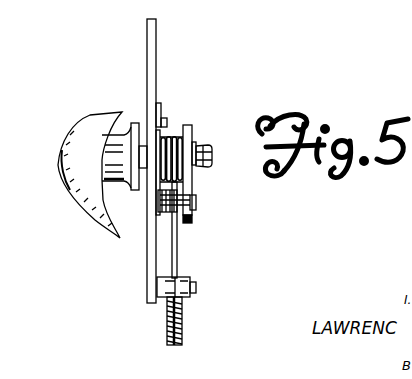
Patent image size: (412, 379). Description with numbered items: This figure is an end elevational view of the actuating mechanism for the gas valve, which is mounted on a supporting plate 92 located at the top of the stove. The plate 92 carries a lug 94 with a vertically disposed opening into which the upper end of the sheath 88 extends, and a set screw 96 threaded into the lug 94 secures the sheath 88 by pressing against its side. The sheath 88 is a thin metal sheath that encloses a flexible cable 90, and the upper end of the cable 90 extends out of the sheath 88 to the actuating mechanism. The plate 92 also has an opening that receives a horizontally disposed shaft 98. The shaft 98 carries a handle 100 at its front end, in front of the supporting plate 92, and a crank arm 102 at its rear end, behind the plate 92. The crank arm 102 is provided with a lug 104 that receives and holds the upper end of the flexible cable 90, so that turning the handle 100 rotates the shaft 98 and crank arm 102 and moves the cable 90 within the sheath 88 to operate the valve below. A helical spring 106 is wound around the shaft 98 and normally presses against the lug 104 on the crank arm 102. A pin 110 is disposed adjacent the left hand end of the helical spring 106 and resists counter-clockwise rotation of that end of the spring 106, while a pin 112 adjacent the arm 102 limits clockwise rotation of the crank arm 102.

The sheath 88 is at (168, 331).
The flexible cable 90 is at (178, 252).
The supporting plate 92 is at (149, 40).
The lug 94 is at (162, 287).
The set screw 96 is at (196, 290).
The shaft 98 is at (208, 156).
The handle 100 is at (82, 165).
The crank arm 102 is at (188, 126).
The lug 104 is at (191, 220).
The helical spring 106 is at (160, 137).
The pin 110 is at (160, 118).
The pin 112 is at (195, 200).